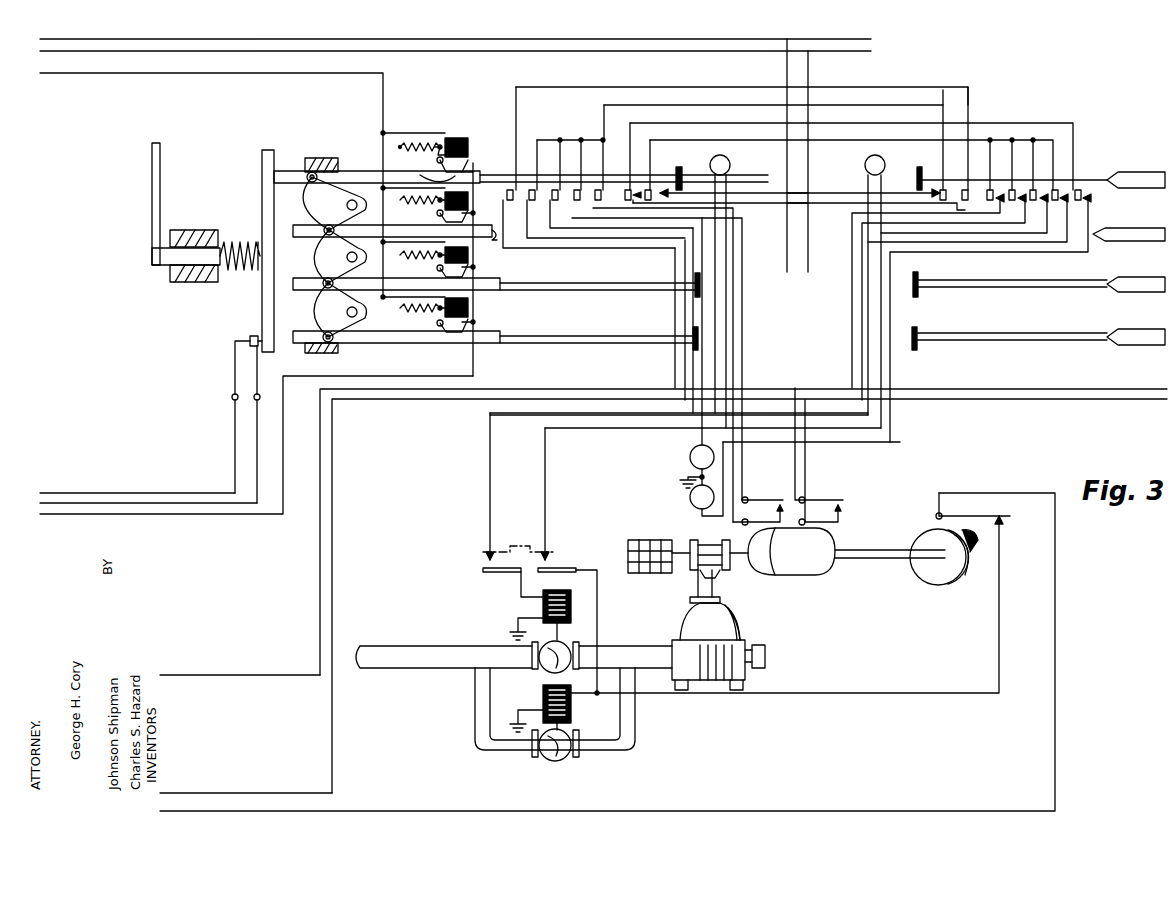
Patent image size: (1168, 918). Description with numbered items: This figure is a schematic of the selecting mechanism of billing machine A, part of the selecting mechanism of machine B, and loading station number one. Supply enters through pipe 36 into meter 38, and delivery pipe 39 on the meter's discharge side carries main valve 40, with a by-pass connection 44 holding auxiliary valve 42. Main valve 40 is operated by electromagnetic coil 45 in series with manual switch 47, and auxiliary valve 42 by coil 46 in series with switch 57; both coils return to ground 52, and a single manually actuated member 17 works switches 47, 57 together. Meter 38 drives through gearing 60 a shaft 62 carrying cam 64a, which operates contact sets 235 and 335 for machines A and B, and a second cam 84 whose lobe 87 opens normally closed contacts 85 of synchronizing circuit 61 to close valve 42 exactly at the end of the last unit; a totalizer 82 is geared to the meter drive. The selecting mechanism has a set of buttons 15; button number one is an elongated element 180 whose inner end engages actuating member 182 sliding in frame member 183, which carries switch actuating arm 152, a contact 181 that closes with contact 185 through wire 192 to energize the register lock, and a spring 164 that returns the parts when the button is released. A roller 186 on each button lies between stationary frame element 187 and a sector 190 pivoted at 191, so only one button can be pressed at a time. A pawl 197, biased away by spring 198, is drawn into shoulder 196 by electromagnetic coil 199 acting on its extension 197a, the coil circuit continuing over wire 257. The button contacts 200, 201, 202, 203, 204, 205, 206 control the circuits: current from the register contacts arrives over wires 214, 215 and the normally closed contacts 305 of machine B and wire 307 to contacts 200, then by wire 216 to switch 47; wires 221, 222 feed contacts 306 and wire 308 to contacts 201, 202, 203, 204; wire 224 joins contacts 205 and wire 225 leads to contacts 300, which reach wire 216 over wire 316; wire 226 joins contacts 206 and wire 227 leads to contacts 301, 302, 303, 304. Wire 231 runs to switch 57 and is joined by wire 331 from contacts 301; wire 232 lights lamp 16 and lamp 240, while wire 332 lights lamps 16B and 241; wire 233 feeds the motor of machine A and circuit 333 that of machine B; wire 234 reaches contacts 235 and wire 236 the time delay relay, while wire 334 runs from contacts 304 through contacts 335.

The wire 257 is at (64, 75).
The wire 221 is at (127, 53).
The wire 214 is at (210, 41).
The switch actuating arm 152 is at (161, 160).
The actuating member 182 is at (262, 184).
The frame member 183 is at (185, 232).
The spring 164 is at (240, 242).
The contact 181 is at (250, 337).
The contact 185 is at (234, 360).
The pivot 191 is at (100, 493).
The wire 192 is at (162, 503).
The roller 186 is at (306, 176).
The stationary frame element 187 is at (322, 158).
The elongated element 180 is at (345, 171).
The sector 190 is at (315, 213).
The shoulder 196 is at (420, 175).
The extension of pawl 197a is at (444, 148).
The spring 198 is at (418, 146).
The electro-magnetic coil 199 is at (460, 138).
The pawl 197 is at (473, 172).
The contacts 200 is at (506, 190).
The contacts 201 is at (531, 190).
The contacts 202 is at (554, 190).
The contacts 203 is at (575, 190).
The contacts 204 is at (603, 135).
The contacts 205 is at (631, 190).
The contacts 206 is at (652, 190).
The wire 308 is at (645, 106).
The wire 225 is at (675, 122).
The wire 227 is at (720, 124).
The wire 307 is at (932, 75).
The lamp 16 is at (727, 160).
The lamp 16B is at (866, 160).
The buttons 15 is at (683, 180).
The wire 226 is at (775, 196).
The wire 224 is at (776, 210).
The wire 222 is at (835, 196).
The wire 215 is at (826, 210).
The contacts 300 is at (1085, 185).
The contacts 306 is at (941, 190).
The contacts 305 is at (964, 190).
The contacts 304 is at (991, 190).
The contacts 303 is at (1013, 190).
The contacts 302 is at (1035, 190).
The contacts 301 is at (1057, 190).
The wire 216 is at (503, 240).
The wire 231 is at (527, 240).
The wire 232 is at (557, 228).
The wire 233 is at (575, 218).
The wire 234 is at (596, 208).
The wire 236 is at (253, 793).
The contacts 235 is at (770, 506).
The contacts 335 is at (835, 500).
The lamp 240 is at (690, 458).
The lamp 241 is at (690, 498).
The wire 316 is at (762, 388).
The wire 331 is at (860, 330).
The wire 332 is at (893, 388).
The circuit 333 is at (1097, 382).
The wire 334 is at (1080, 400).
The manually actuated member 17 is at (512, 545).
The manually controlled switch 47 is at (483, 560).
The manually operated switch 57 is at (548, 565).
The electromagnetic coil 45 is at (571, 604).
The ground 52 is at (512, 630).
The main valve 40 is at (560, 652).
The delivery pipe 39 is at (414, 650).
The by-pass connection 44 is at (475, 705).
The electro-magnetic coil 46 is at (571, 710).
The auxiliary valve 42 is at (548, 768).
The meter 38 is at (735, 630).
The pipe 36 is at (766, 656).
The gearing 60 is at (730, 578).
The totalizer 82 is at (637, 543).
The cam 64a is at (795, 575).
The shaft 62 is at (890, 545).
The second cam 84 is at (935, 578).
The lobe 87 is at (972, 555).
The contacts 85 is at (1008, 518).
The synchronizing circuit 61 is at (1056, 650).